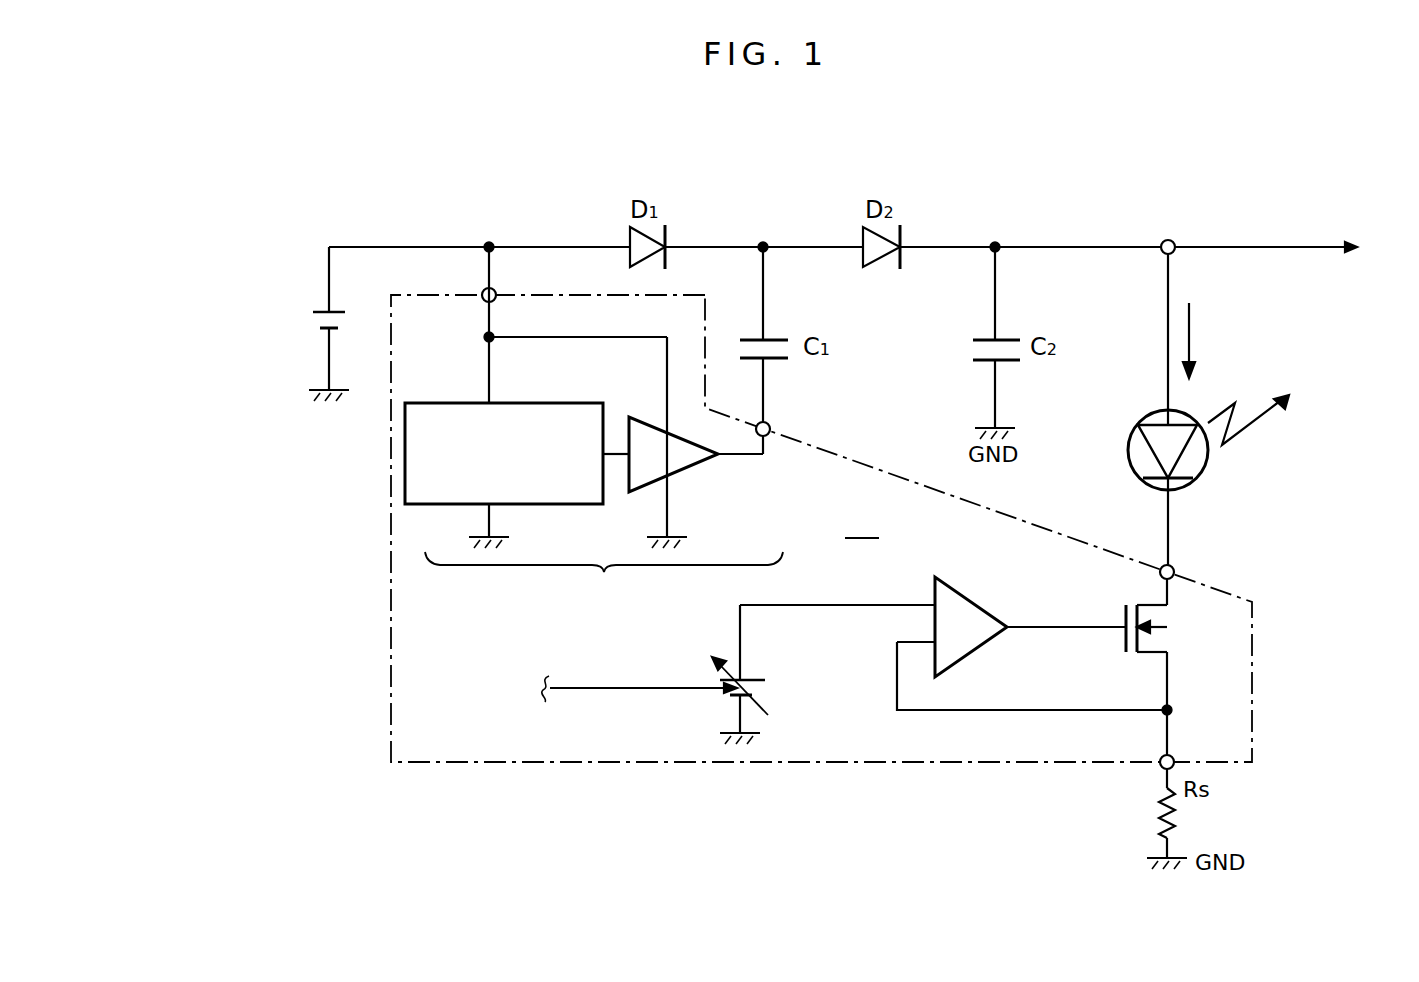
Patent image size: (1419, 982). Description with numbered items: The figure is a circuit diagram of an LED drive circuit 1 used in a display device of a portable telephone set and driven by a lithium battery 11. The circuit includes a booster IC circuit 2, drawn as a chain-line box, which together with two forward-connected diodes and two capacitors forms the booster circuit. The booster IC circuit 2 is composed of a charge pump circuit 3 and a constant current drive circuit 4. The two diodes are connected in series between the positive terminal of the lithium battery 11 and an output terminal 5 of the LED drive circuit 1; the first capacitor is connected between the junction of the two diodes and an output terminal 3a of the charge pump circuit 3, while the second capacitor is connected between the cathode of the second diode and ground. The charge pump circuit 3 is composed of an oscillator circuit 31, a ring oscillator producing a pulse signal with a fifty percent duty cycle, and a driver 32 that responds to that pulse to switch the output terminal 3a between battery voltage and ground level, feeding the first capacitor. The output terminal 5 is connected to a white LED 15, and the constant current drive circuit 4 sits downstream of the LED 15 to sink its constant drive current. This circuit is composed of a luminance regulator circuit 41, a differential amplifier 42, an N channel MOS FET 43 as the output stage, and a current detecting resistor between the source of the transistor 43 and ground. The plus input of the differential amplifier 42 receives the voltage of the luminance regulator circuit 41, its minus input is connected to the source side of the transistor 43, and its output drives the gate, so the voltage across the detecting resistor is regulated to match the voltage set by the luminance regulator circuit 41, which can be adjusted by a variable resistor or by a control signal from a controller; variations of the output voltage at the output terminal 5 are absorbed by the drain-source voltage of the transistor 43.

The LED drive circuit 1 is at (978, 170).
The booster IC circuit 2 is at (1243, 619).
The charge pump circuit 3 is at (630, 450).
The output terminal of the charge pump circuit 3a is at (771, 427).
The constant current drive circuit 4 is at (905, 738).
The output terminal 5 is at (1167, 240).
The lithium battery 11 is at (313, 313).
The white LED 15 is at (1207, 467).
The oscillator circuit 31 is at (540, 402).
The driver 32 is at (625, 418).
The luminance regulator circuit 41 is at (753, 678).
The differential amplifier 42 is at (983, 607).
The N channel MOS FET 43 is at (1167, 607).